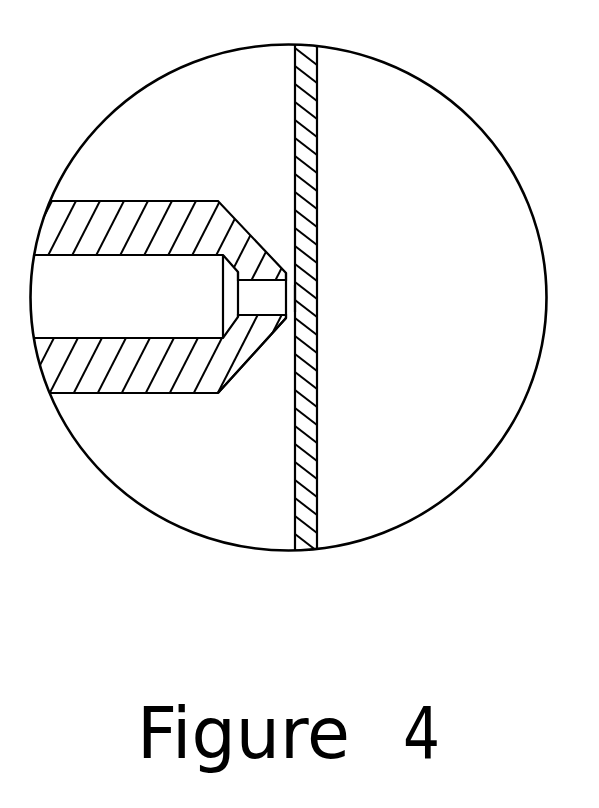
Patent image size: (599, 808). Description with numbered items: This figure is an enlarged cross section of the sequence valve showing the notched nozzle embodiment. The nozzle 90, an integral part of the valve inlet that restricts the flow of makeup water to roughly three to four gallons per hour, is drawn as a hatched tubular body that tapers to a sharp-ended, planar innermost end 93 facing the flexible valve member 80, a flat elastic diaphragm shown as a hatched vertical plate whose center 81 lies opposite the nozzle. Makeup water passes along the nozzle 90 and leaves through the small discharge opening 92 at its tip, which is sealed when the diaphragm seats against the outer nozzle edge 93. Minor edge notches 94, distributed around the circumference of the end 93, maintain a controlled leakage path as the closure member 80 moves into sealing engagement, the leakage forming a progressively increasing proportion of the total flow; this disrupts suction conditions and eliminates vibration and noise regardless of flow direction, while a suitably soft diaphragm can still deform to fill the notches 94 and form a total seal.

The flexible valve member 80 is at (305, 185).
The center 81 is at (305, 298).
The nozzle 90 is at (257, 243).
The discharge opening 92 is at (253, 293).
The innermost end 93 is at (278, 333).
The edge notches 94 is at (285, 287).